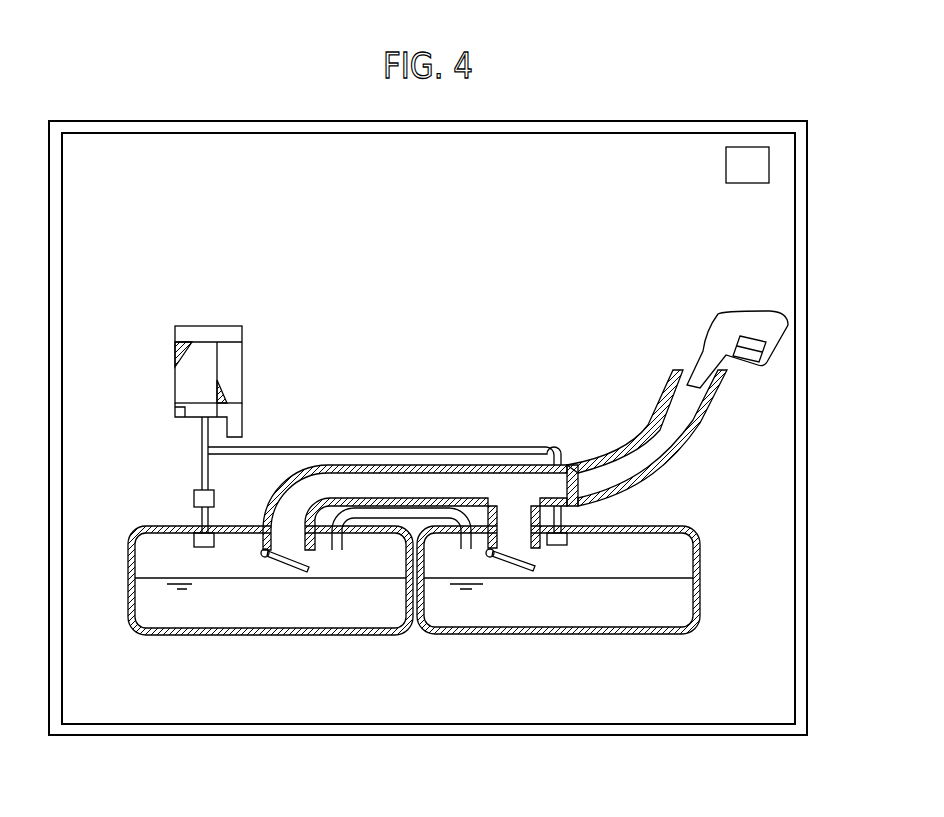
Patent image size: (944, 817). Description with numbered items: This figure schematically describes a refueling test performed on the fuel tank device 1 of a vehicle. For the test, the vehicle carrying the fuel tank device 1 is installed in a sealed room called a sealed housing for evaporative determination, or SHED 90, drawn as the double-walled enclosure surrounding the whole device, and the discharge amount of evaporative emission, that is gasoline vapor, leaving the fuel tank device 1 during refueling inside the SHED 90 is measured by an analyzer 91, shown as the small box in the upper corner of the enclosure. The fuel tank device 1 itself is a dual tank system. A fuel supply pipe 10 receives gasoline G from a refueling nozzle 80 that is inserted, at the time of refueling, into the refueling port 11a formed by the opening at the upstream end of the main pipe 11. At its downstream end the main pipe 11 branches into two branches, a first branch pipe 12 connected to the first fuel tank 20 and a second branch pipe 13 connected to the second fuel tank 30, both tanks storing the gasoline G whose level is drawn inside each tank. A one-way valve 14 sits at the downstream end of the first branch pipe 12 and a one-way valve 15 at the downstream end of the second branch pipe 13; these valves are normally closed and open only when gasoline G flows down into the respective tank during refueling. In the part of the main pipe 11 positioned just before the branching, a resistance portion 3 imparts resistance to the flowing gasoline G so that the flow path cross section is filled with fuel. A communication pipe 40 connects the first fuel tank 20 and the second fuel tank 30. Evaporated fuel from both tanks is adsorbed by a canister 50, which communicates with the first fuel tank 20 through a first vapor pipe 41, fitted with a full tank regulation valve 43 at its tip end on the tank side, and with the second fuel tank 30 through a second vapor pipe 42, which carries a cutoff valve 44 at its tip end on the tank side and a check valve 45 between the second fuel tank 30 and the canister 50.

The fuel tank device 1 is at (334, 310).
The resistance portion 3 is at (583, 481).
The fuel supply pipe 10 is at (636, 381).
The main pipe 11 is at (636, 381).
The refueling port 11a is at (690, 370).
The first branch pipe 12 is at (486, 506).
The second branch pipe 13 is at (360, 464).
The one-way valve 14 is at (505, 577).
The one-way valve 15 is at (283, 568).
The first fuel tank 20 is at (567, 634).
The second fuel tank 30 is at (328, 636).
The communication pipe 40 is at (402, 518).
The first vapor pipe 41 is at (505, 446).
The second vapor pipe 42 is at (200, 474).
The full tank regulation valve 43 is at (560, 546).
The cutoff valve 44 is at (202, 547).
The check valve 45 is at (194, 498).
The canister 50 is at (202, 326).
The refueling nozzle 80 is at (749, 315).
The sealed housing for evaporative determination (SHED) 90 is at (807, 222).
The analyzer 91 is at (769, 158).
The gasoline G is at (150, 600).